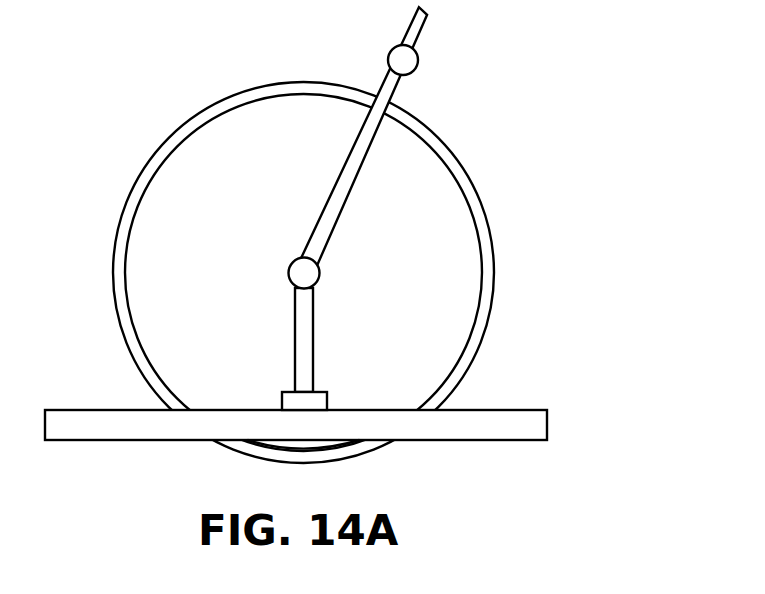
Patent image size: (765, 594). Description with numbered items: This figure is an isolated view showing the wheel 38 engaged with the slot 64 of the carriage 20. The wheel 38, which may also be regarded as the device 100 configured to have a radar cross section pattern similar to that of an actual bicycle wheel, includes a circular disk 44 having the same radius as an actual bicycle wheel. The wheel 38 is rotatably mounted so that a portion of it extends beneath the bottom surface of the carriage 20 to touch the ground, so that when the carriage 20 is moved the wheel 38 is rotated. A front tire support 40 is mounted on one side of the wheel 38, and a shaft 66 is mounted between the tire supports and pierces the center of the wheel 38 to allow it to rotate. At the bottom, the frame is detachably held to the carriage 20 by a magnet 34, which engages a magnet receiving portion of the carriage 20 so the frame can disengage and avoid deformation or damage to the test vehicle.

The carriage 20 is at (512, 392).
The magnet 34 is at (320, 402).
The wheel 38 is at (528, 121).
The device 100 is at (531, 116).
The front tire support 40 is at (326, 177).
The disk 44 is at (452, 223).
The slot 64 is at (390, 442).
The shaft 66 is at (311, 278).